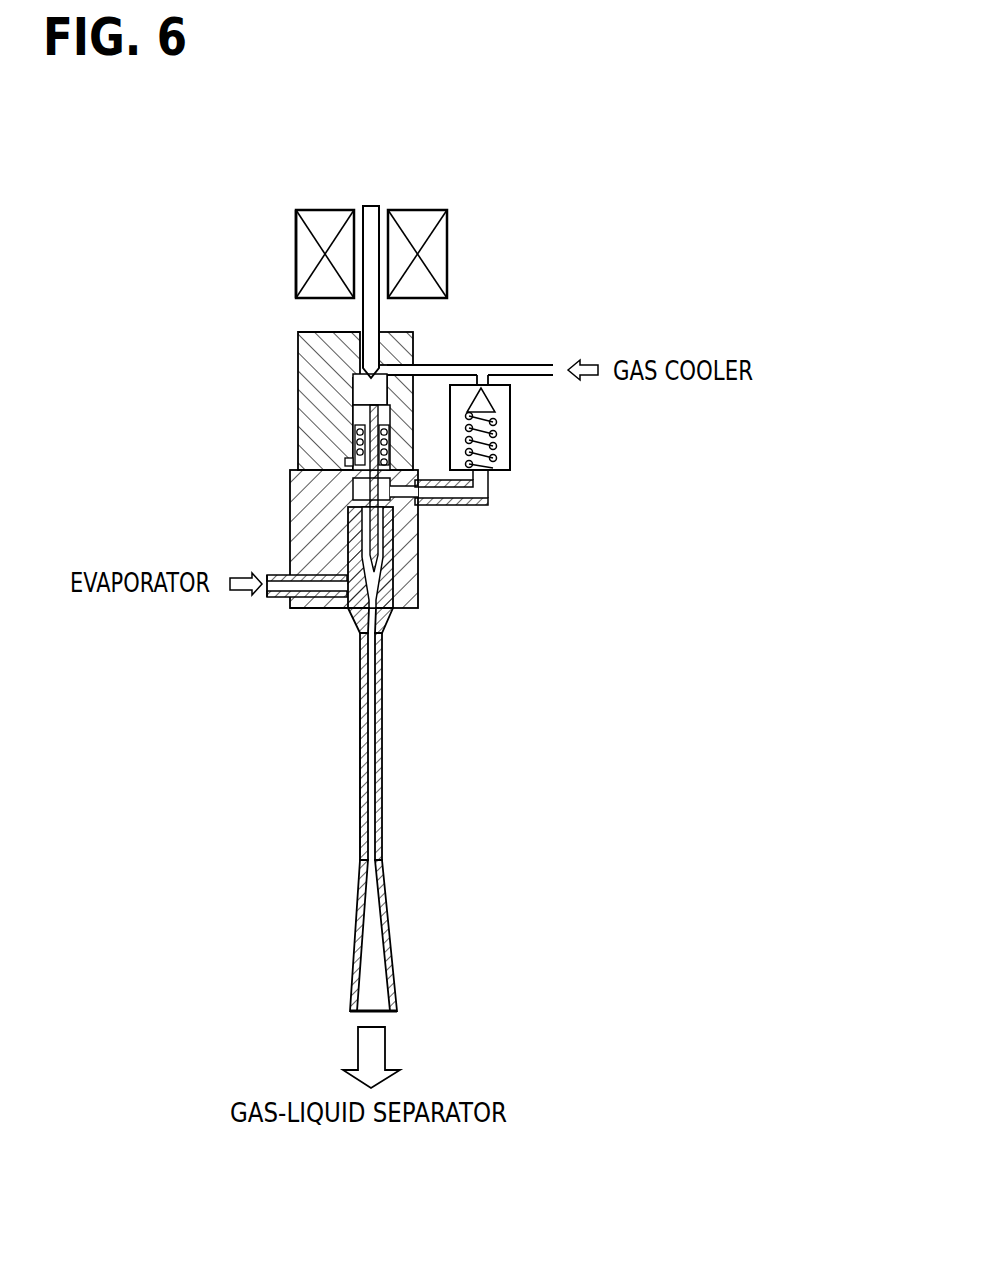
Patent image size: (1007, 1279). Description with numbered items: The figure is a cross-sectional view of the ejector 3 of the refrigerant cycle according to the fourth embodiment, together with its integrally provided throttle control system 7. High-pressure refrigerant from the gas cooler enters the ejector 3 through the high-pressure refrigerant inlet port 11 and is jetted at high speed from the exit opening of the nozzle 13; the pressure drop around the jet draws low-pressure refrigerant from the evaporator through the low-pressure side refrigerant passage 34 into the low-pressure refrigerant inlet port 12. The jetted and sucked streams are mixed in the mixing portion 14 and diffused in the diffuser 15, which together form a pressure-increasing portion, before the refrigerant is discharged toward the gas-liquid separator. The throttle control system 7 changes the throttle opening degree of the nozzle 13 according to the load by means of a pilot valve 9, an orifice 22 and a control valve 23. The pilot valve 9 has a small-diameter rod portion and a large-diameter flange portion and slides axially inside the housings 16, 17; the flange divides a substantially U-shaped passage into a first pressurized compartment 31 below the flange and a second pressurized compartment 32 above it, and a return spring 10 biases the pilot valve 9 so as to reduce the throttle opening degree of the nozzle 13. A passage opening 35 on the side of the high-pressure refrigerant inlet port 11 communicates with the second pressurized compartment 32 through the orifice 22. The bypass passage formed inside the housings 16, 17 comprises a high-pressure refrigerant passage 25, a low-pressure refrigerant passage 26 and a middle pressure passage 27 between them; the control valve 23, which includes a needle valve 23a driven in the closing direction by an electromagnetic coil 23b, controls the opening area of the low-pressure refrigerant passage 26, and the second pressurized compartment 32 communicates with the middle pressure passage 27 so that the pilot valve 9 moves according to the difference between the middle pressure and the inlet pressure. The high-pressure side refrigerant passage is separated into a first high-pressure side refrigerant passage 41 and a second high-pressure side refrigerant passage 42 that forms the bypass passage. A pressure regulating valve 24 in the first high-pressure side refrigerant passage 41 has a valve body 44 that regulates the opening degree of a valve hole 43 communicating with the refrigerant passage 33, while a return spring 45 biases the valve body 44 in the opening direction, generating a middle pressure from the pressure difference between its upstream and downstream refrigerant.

The ejector 3 is at (355, 908).
The throttle control system 7 is at (272, 228).
The pilot valve 9 is at (395, 555).
The return spring 10 is at (350, 418).
The high-pressure refrigerant inlet port 11 is at (368, 512).
The low-pressure refrigerant inlet port 12 is at (340, 608).
The nozzle 13 is at (393, 607).
The mixing portion 14 is at (370, 733).
The diffuser 15 is at (375, 937).
The housing 16 is at (298, 333).
The housing 17 is at (295, 608).
The orifice 22 is at (270, 440).
The control valve 23 is at (540, 213).
The needle valve 23a is at (373, 307).
The electromagnetic coil 23b is at (442, 240).
The pressure regulating valve 24 is at (512, 436).
The high-pressure refrigerant passage 25 is at (438, 365).
The low-pressure refrigerant passage 26 is at (276, 502).
The middle pressure passage 27 is at (272, 372).
The first pressurized compartment 31 is at (355, 380).
The second pressurized compartment 32 is at (350, 462).
The refrigerant passage 33 is at (452, 492).
The low-pressure side refrigerant passage 34 is at (270, 598).
The passage opening 35 is at (360, 495).
The first high-pressure side refrigerant passage 41 is at (490, 380).
The second high-pressure side refrigerant passage 42 is at (357, 452).
The valve hole 43 is at (481, 375).
The valve body 44 is at (487, 400).
The return spring 45 is at (512, 462).